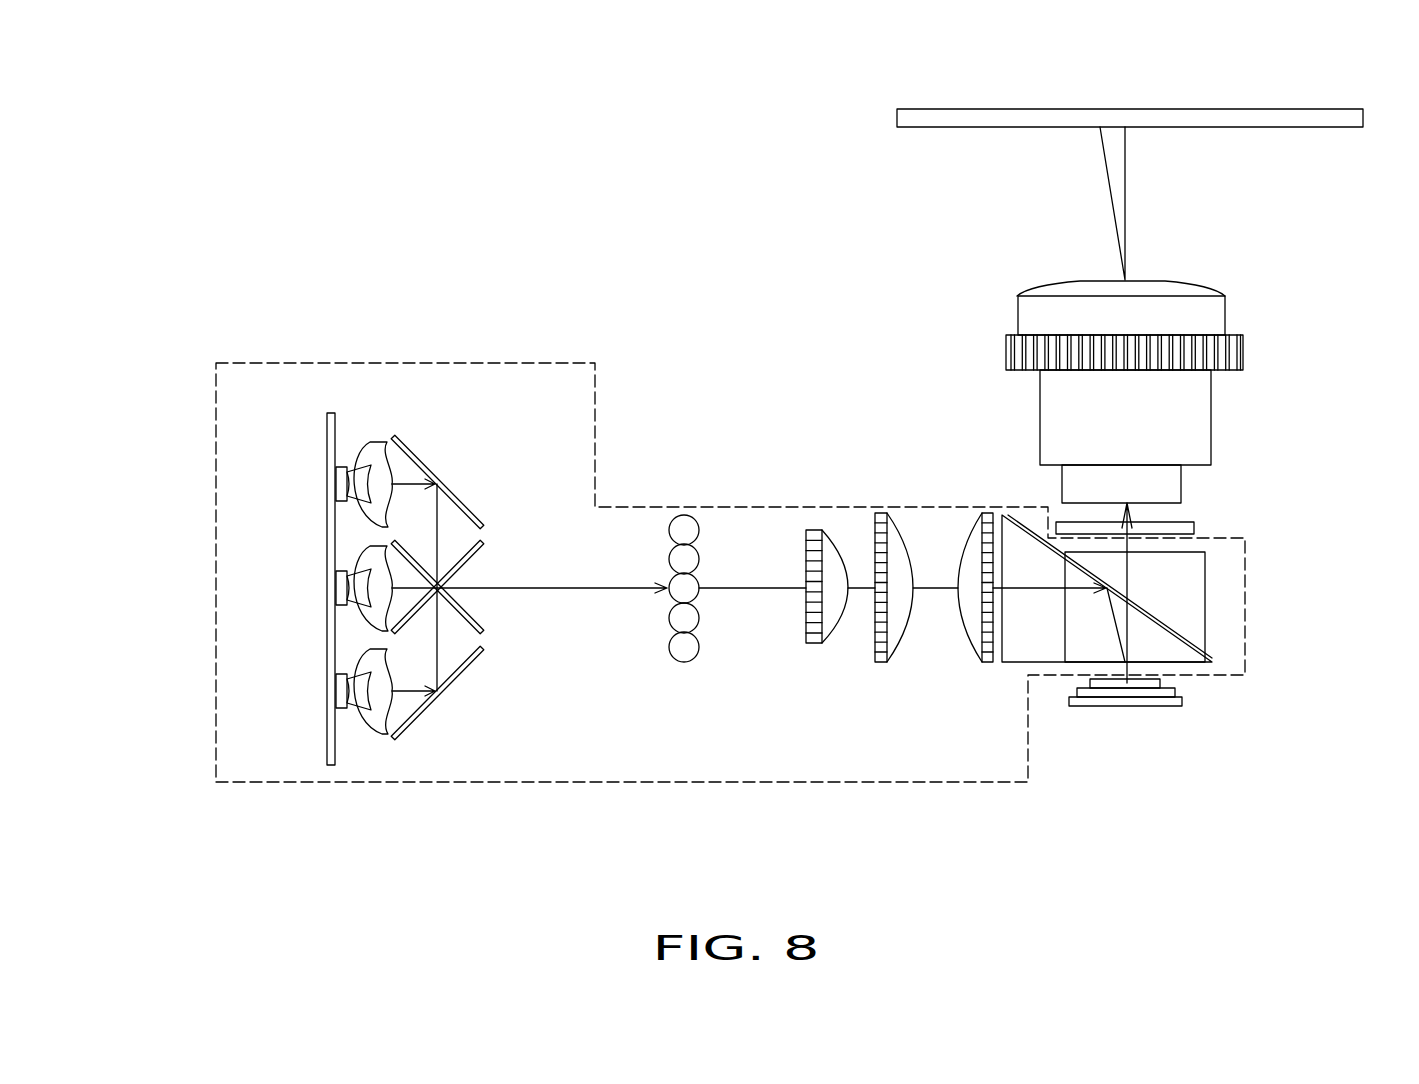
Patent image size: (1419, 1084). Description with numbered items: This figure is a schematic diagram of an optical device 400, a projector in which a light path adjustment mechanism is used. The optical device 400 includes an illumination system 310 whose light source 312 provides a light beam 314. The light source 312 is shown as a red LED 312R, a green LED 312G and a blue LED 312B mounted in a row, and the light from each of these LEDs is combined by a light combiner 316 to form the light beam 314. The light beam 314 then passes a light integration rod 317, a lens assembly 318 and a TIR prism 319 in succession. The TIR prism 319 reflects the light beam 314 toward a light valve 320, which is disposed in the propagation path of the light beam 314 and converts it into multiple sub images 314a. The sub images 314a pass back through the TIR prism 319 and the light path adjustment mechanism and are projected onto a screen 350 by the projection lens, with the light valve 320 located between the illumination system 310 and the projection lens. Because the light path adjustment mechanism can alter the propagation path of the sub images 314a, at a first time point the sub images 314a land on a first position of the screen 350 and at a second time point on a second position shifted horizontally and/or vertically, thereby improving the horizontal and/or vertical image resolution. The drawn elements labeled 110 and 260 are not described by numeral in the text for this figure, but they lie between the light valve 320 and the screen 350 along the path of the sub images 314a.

The optical device 400 is at (230, 74).
The illumination system 310 is at (725, 507).
The light source 312 is at (278, 396).
The red LED 312R is at (342, 486).
The green LED 312G is at (342, 591).
The blue LED 312B is at (342, 695).
The light beam 314 is at (572, 590).
The sub images 314a is at (1127, 572).
The light combiner 316 is at (388, 396).
The light integration rod 317 is at (692, 646).
The lens assembly 318 is at (800, 482).
The TIR prism 319 is at (1220, 615).
The light valve 320 is at (1143, 684).
The optical element 110 is at (1190, 530).
The projection lens 260 is at (1195, 428).
The screen 350 is at (897, 113).